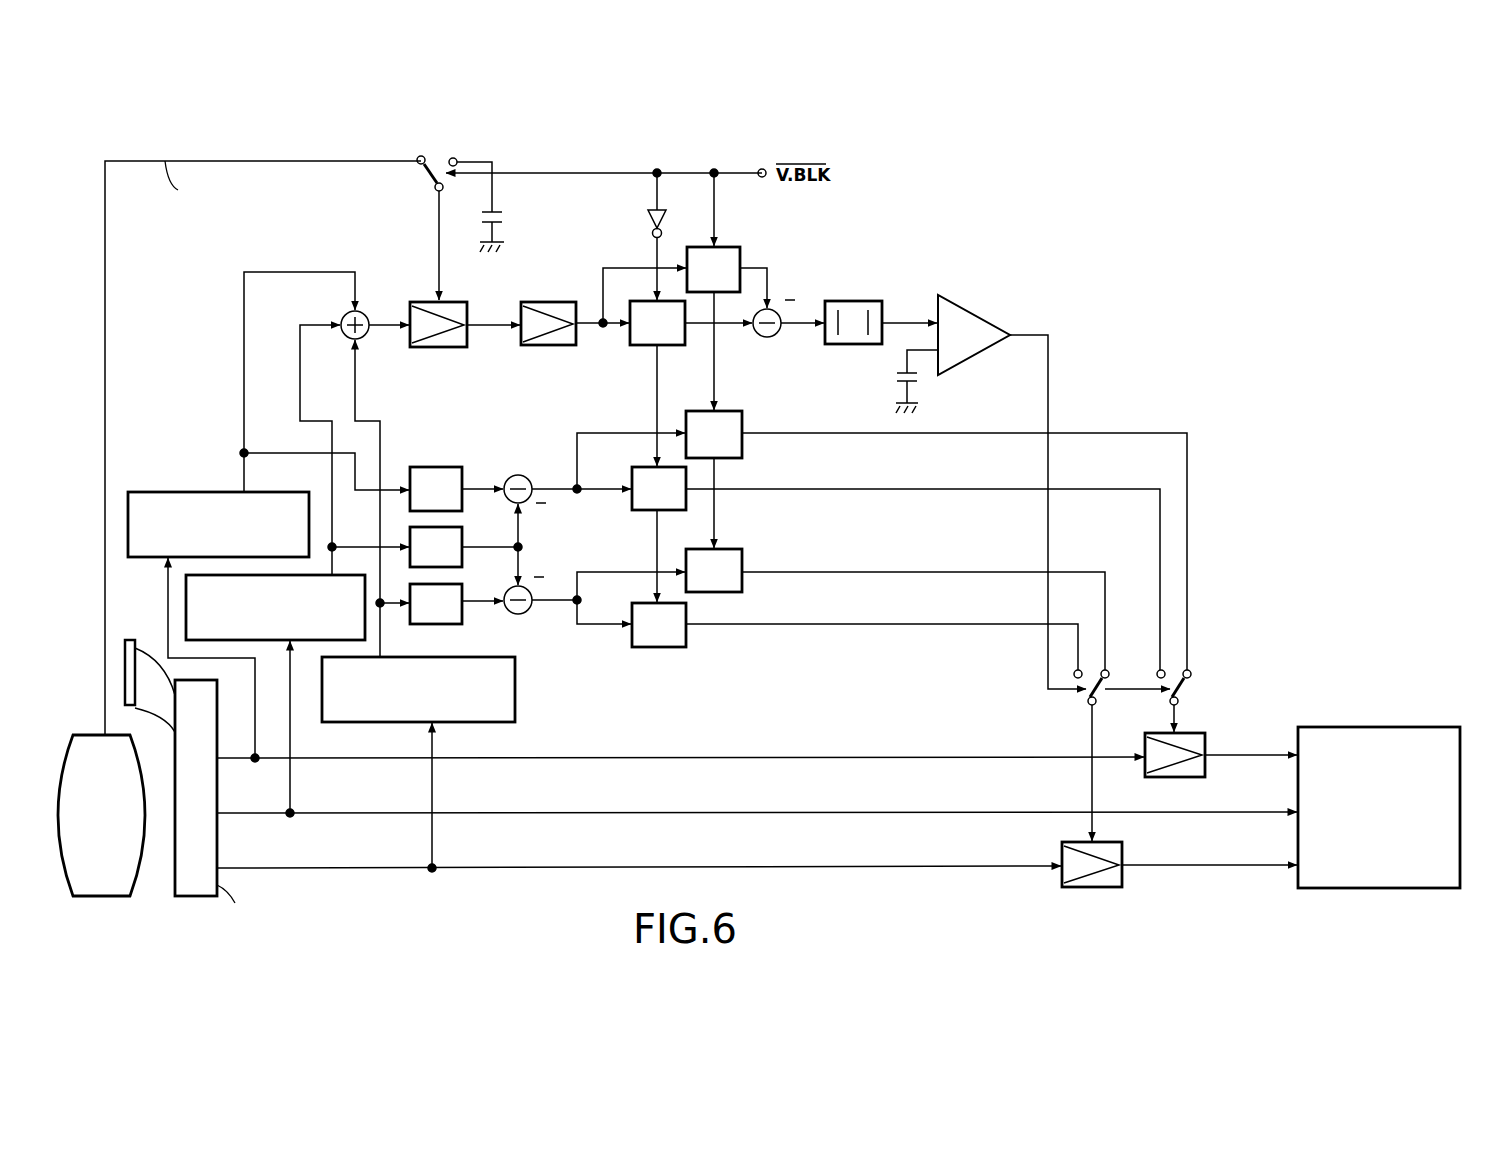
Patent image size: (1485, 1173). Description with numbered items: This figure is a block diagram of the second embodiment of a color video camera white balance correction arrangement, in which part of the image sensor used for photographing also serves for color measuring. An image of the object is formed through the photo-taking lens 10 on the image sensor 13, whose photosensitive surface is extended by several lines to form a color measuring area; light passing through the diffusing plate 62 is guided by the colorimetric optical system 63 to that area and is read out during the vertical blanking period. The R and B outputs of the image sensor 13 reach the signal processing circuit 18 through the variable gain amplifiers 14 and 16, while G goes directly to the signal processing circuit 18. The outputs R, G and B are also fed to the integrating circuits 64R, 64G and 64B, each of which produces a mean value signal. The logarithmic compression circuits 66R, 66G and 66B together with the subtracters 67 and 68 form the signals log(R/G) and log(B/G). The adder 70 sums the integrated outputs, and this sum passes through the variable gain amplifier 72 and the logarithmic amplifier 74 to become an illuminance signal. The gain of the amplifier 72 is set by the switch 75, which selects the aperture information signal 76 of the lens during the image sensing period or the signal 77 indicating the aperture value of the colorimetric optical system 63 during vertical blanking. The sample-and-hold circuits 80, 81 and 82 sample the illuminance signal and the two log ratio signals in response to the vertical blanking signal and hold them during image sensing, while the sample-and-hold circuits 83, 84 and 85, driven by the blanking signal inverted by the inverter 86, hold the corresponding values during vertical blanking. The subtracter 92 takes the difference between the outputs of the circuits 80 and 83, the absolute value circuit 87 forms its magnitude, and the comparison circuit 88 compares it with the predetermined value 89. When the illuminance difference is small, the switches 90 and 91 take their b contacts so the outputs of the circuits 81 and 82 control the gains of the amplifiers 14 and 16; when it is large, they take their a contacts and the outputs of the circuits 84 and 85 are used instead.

The photo-taking lens 10 is at (104, 897).
The image sensor 13 is at (201, 897).
The variable gain amplifier 14 is at (1205, 766).
The variable gain amplifier 16 is at (1122, 881).
The signal processing circuit 18 is at (1352, 727).
The diffusing plate 62 is at (128, 640).
The colorimetric optical system 63 is at (145, 672).
The integrating circuit 64R is at (178, 492).
The integrating circuit 64G is at (272, 641).
The integrating circuit 64B is at (515, 706).
The logarithmic compression circuit 66R is at (438, 467).
The logarithmic compression circuit 66G is at (462, 542).
The logarithmic compression circuit 66B is at (462, 616).
The subtracter 67 is at (516, 475).
The subtracter 68 is at (527, 615).
The adder 70 is at (366, 313).
The variable gain amplifier 72 is at (449, 347).
The logarithmic amplifier 74 is at (550, 345).
The switch 75 is at (437, 150).
The aperture information signal 76 is at (350, 161).
The signal indicative of aperture value of colorimetric optical system 77 is at (492, 158).
The sample-and-hold circuit 80 is at (740, 252).
The sample-and-hold circuit 81 is at (742, 422).
The sample-and-hold circuit 82 is at (742, 556).
The sample-and-hold circuit 83 is at (645, 346).
The sample-and-hold circuit 84 is at (646, 511).
The sample-and-hold circuit 85 is at (668, 648).
The inverter 86 is at (648, 218).
The absolute value circuit 87 is at (857, 301).
The comparison circuit 88 is at (972, 306).
The predetermined value 89 is at (918, 378).
The switch 90 is at (1190, 681).
The switch 91 is at (1086, 705).
The subtracter 92 is at (770, 337).